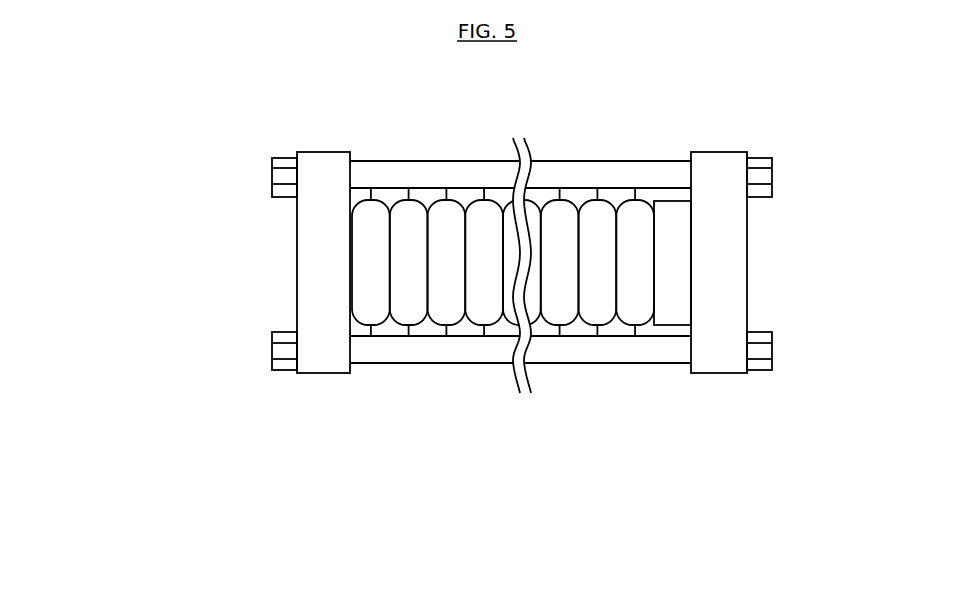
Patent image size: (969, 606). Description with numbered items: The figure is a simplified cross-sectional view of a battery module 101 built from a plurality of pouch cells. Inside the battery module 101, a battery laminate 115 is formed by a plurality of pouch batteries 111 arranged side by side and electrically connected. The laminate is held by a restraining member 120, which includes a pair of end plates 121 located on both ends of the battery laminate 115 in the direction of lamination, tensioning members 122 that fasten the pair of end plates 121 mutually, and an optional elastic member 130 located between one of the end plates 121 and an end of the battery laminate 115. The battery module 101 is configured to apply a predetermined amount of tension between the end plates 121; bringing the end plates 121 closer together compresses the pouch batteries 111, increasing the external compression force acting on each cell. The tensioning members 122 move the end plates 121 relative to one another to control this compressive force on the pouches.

The battery module 101 is at (768, 90).
The restraining member 120 is at (115, 66).
The end plates 121 is at (718, 282).
The tensioning members 122 is at (430, 175).
The battery laminate 115 is at (580, 500).
The pouch batteries 111 is at (375, 312).
The elastic member 130 is at (673, 295).